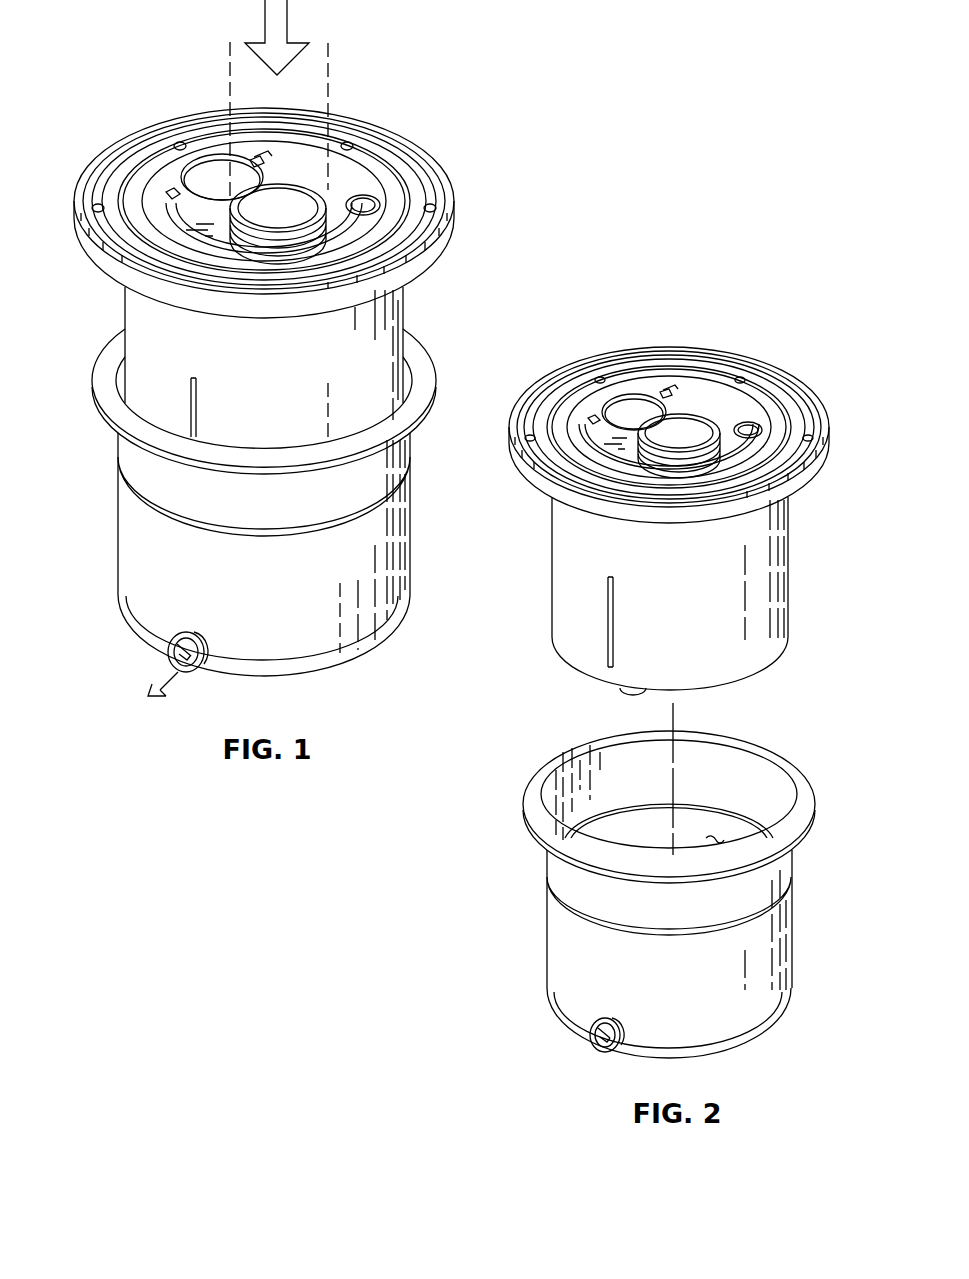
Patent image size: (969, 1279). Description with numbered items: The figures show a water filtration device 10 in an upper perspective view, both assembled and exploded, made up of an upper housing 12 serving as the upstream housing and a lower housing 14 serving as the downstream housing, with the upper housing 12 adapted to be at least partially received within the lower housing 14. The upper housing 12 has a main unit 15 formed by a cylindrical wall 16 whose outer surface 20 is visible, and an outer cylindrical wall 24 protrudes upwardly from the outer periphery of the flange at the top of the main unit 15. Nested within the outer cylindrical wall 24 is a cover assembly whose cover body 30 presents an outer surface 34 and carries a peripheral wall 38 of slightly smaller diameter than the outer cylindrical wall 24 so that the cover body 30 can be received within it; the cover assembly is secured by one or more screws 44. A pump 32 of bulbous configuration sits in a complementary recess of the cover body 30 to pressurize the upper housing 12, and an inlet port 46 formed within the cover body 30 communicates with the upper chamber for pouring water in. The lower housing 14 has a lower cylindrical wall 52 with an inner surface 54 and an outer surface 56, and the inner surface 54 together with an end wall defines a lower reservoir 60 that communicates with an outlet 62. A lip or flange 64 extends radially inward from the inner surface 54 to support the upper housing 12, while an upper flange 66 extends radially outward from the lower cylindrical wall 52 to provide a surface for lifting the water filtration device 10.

In FIG. 1, the water filtration device 10 is at (430, 62).
In FIG. 2, the water filtration device 10 is at (745, 276).
In FIG. 1, the upper housing 12 is at (280, 243).
In FIG. 1, the lower housing 14 is at (237, 522).
In FIG. 2, the lower housing 14 is at (664, 899).
In FIG. 1, the main unit 15 is at (458, 180).
In FIG. 2, the main unit 15 is at (798, 893).
In FIG. 1, the cylindrical wall 16 is at (406, 302).
In FIG. 2, the cylindrical wall 16 is at (550, 580).
In FIG. 1, the outer surface 20 is at (386, 337).
In FIG. 1, the outer cylindrical wall 24 is at (456, 223).
In FIG. 2, the outer cylindrical wall 24 is at (534, 478).
In FIG. 1, the cover body 30 is at (342, 183).
In FIG. 2, the cover body 30 is at (720, 398).
In FIG. 1, the pump 32 is at (218, 158).
In FIG. 2, the pump 32 is at (633, 395).
In FIG. 1, the outer surface 34 is at (358, 185).
In FIG. 2, the outer surface 34 is at (747, 412).
In FIG. 1, the peripheral wall 38 is at (152, 142).
In FIG. 1, the screws 44 is at (98, 204).
In FIG. 2, the screws 44 is at (669, 409).
In FIG. 1, the inlet port 46 is at (290, 214).
In FIG. 2, the inlet port 46 is at (693, 433).
In FIG. 1, the lower cylindrical wall 52 is at (352, 600).
In FIG. 2, the lower cylindrical wall 52 is at (789, 953).
In FIG. 2, the inner surface 54 is at (725, 768).
In FIG. 1, the outer surface 56 is at (290, 633).
In FIG. 2, the outer surface 56 is at (762, 1000).
In FIG. 2, the lower reservoir 60 is at (717, 840).
In FIG. 1, the outlet 62 is at (170, 660).
In FIG. 2, the outlet 62 is at (601, 1047).
In FIG. 2, the lip or flange 64 is at (562, 830).
In FIG. 1, the upper flange 66 is at (105, 383).
In FIG. 2, the upper flange 66 is at (535, 816).